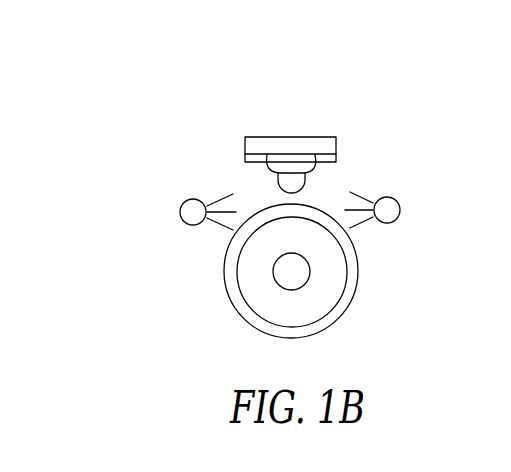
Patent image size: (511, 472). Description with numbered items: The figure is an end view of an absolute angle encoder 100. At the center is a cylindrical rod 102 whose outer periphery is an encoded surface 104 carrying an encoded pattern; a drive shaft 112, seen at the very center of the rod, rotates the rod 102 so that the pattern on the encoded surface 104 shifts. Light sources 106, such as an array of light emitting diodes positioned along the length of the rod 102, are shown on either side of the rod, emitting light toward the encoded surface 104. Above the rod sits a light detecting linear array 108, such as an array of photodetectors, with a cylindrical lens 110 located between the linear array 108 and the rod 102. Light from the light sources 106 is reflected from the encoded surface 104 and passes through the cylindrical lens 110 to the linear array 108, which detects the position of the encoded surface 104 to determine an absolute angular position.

The absolute angle encoder 100 is at (127, 157).
The cylindrical rod 102 is at (330, 281).
The encoded surface 104 is at (241, 318).
The light sources 106 is at (180, 212).
The light detecting linear array 108 is at (305, 137).
The cylindrical lens 110 is at (303, 187).
The drive shaft 112 is at (273, 272).